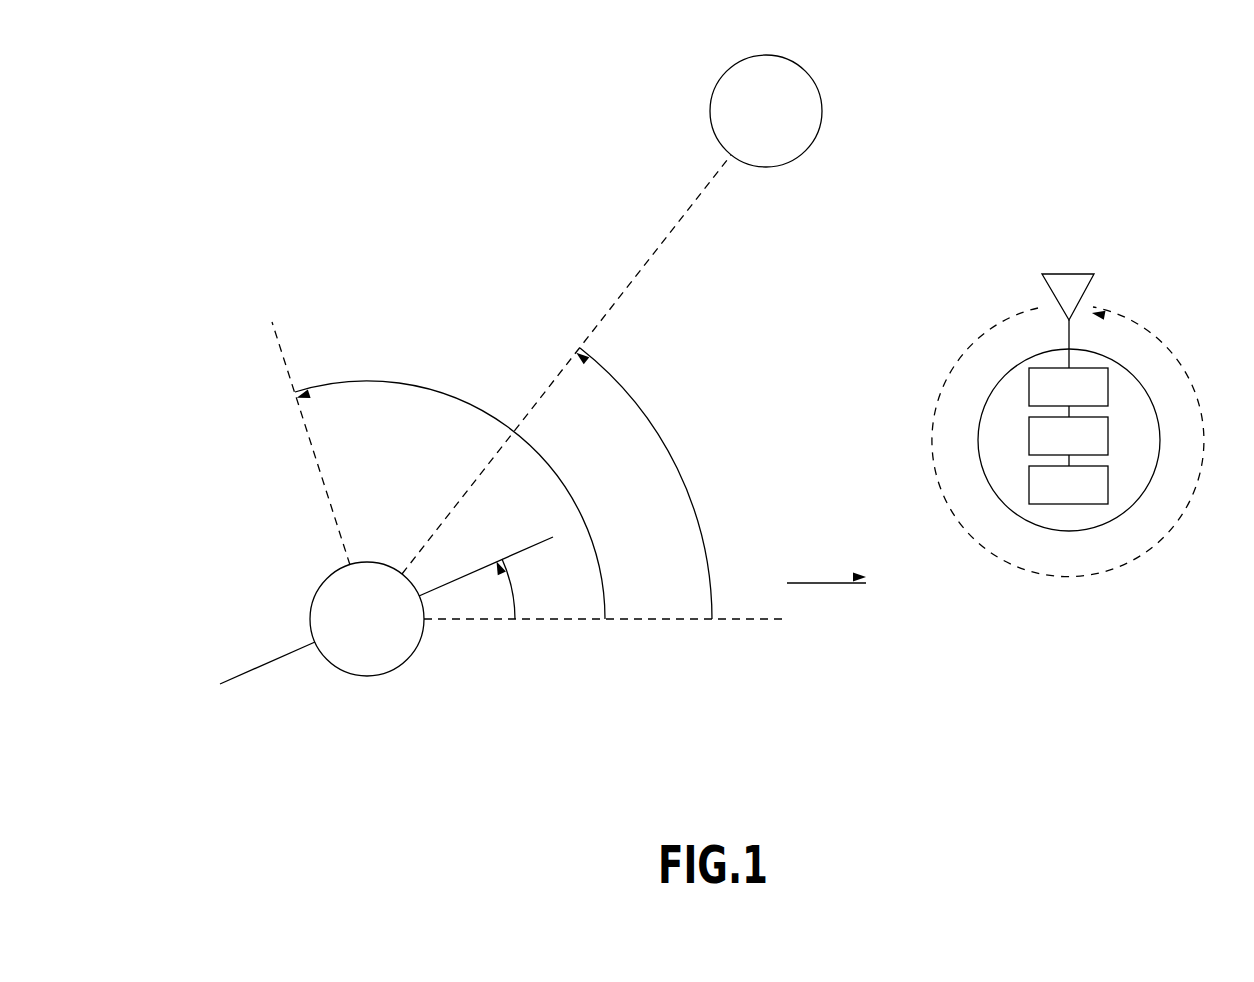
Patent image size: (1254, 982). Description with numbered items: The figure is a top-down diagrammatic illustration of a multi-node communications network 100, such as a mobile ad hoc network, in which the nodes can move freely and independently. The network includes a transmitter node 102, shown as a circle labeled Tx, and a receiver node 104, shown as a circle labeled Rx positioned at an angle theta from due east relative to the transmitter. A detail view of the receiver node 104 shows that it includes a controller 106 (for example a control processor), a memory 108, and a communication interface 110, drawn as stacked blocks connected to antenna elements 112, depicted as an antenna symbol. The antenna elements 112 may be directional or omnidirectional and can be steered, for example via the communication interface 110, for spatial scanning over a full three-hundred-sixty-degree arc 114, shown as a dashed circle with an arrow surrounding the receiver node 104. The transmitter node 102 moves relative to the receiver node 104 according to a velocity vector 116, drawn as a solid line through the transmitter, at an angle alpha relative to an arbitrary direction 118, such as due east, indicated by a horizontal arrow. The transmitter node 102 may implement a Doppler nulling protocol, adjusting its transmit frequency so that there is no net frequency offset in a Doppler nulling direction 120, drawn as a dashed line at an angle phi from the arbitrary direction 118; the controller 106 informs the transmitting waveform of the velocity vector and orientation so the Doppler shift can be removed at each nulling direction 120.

The multi-node communications network 100 is at (222, 150).
The transmitter node 102 is at (321, 588).
The receiver node 104 is at (722, 75).
The controller 106 is at (1068, 436).
The memory 108 is at (1068, 485).
The communication interface 110 is at (1068, 387).
The antenna elements 112 is at (1060, 273).
The 360-degree arc 114 is at (1108, 567).
The velocity vector 116 is at (462, 578).
The arbitrary direction 118 is at (806, 584).
The Doppler nulling direction 120 is at (277, 350).